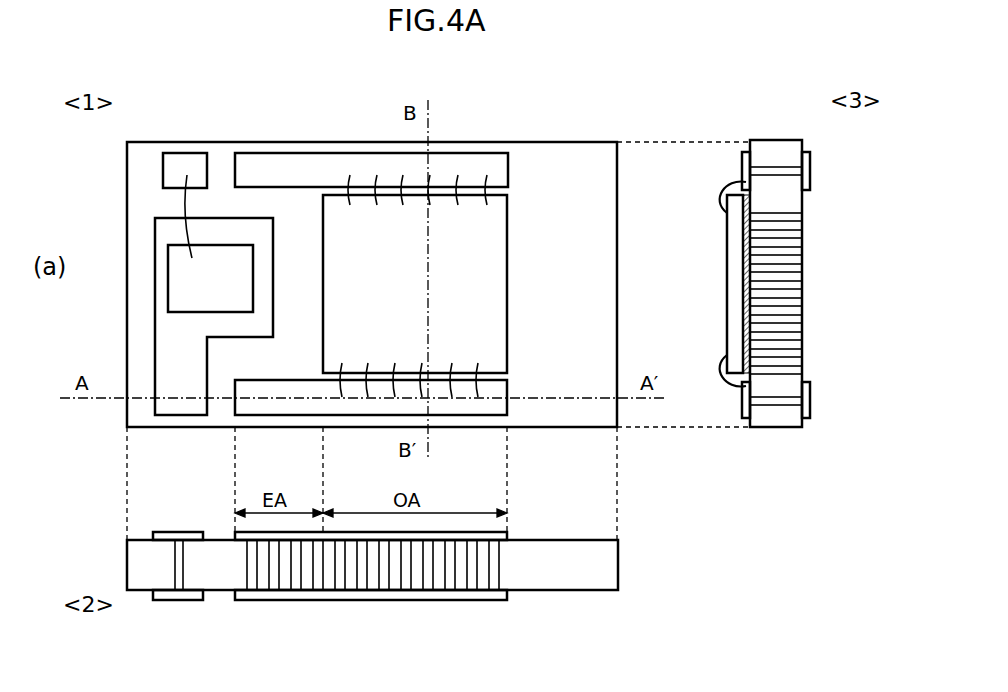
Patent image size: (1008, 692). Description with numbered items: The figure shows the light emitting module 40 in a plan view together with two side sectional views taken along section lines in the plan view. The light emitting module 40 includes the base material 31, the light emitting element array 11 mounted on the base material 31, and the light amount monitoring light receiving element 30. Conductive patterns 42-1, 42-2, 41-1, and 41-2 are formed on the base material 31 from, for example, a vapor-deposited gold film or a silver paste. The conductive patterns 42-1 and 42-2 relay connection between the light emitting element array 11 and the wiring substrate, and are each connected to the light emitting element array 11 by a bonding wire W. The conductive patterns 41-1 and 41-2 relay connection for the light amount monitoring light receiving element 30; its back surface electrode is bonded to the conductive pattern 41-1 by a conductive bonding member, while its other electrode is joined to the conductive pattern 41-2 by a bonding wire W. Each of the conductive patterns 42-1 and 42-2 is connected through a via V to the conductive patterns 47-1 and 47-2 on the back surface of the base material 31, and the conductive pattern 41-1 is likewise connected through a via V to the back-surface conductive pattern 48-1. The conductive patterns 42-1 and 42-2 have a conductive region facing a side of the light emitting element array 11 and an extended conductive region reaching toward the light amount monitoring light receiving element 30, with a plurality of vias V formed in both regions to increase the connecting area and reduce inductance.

The light emitting element array 11 is at (507, 252).
The light amount monitoring light receiving element 30 is at (168, 295).
The base material 31 is at (184, 142).
The light emitting module 40 is at (595, 115).
The conductive pattern 41-1 is at (155, 345).
The conductive pattern 41-2 is at (163, 170).
The conductive pattern 42-1 is at (507, 385).
The conductive pattern 42-2 is at (285, 153).
The conductive pattern 47-1 is at (360, 600).
The conductive pattern 47-2 is at (812, 170).
The conductive pattern 48-1 is at (180, 600).
The via V is at (183, 575).
The bonding wire W is at (500, 180).